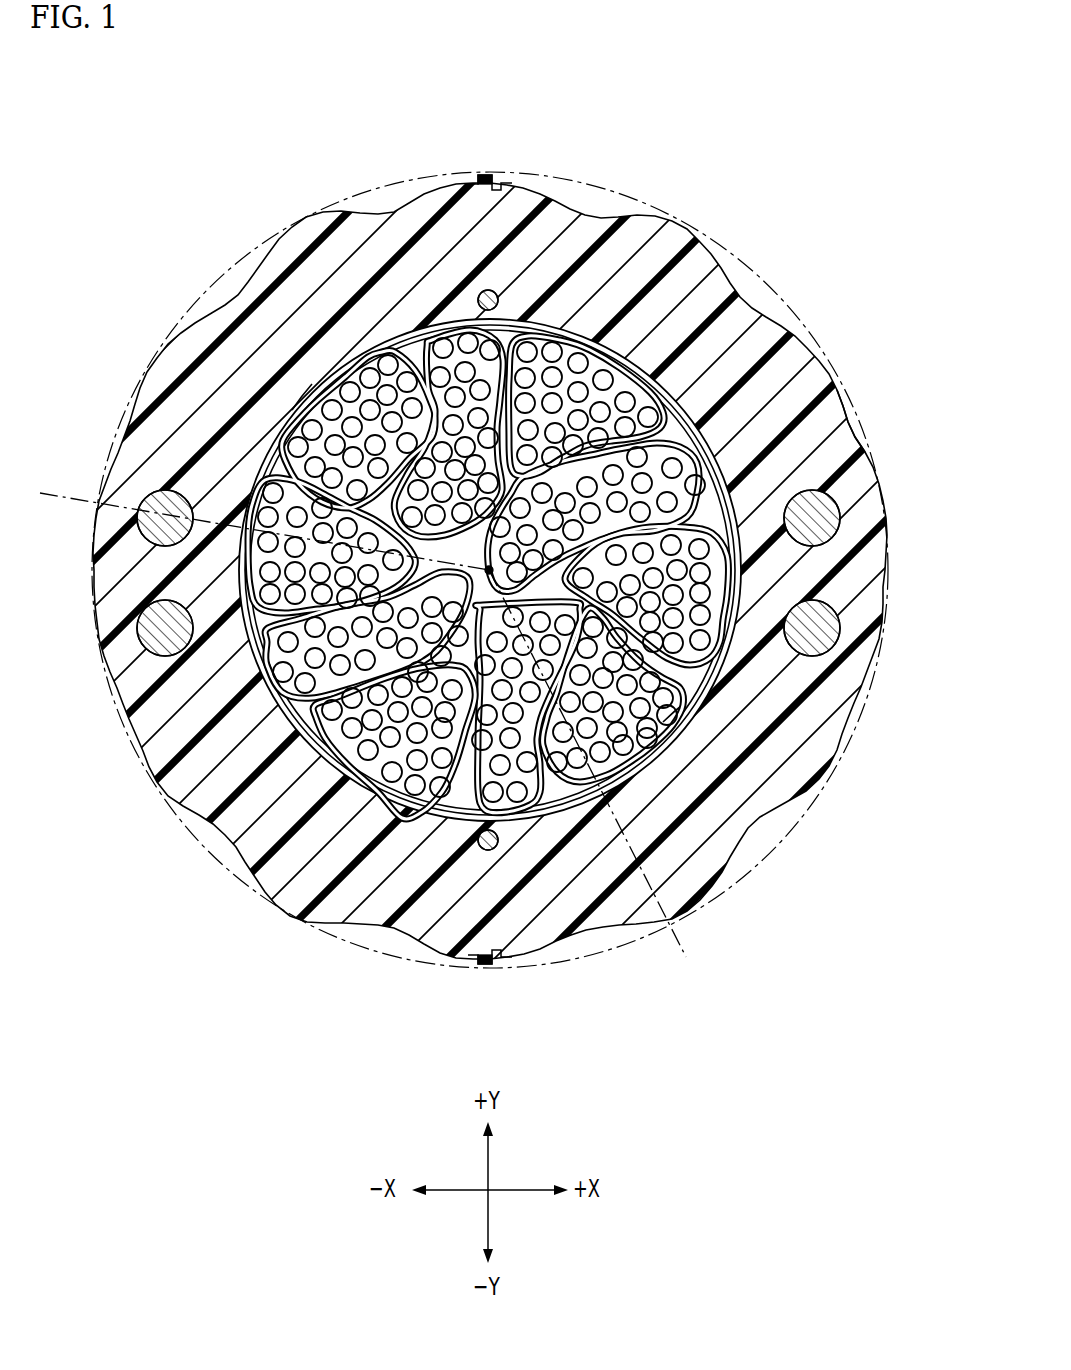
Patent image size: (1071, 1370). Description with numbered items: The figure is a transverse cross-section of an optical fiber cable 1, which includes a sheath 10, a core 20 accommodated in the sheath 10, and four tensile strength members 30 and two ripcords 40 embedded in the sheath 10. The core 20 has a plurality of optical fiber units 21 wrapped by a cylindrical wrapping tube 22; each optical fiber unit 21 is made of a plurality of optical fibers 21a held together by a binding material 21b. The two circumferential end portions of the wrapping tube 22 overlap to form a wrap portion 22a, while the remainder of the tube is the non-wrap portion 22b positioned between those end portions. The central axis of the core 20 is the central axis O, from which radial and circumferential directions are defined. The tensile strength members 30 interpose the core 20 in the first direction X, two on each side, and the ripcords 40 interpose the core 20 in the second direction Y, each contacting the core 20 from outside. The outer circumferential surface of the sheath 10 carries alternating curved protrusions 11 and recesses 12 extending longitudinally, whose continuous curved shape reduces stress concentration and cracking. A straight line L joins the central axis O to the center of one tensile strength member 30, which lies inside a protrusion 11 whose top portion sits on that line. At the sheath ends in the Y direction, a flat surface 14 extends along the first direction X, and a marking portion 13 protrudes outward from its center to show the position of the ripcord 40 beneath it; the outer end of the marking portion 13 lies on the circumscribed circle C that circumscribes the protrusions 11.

The optical fiber cable 1 is at (213, 146).
The sheath 10 is at (687, 219).
The protrusion 11 is at (822, 366).
The recess 12 is at (853, 432).
The marking portion 13 is at (484, 176).
The flat surface 14 is at (498, 180).
The core 20 is at (672, 390).
The optical fiber unit 21 is at (124, 862).
The optical fiber 21a is at (342, 727).
The binding material 21b is at (368, 783).
The wrapping tube 22 is at (430, 821).
The wrap portion 22a is at (300, 398).
The non-wrap portion 22b is at (660, 722).
The tensile strength member 30 is at (826, 526).
The ripcord 40 is at (492, 294).
The circumscribed circle C is at (366, 191).
The straight line L is at (61, 491).
The central axis O is at (591, 776).